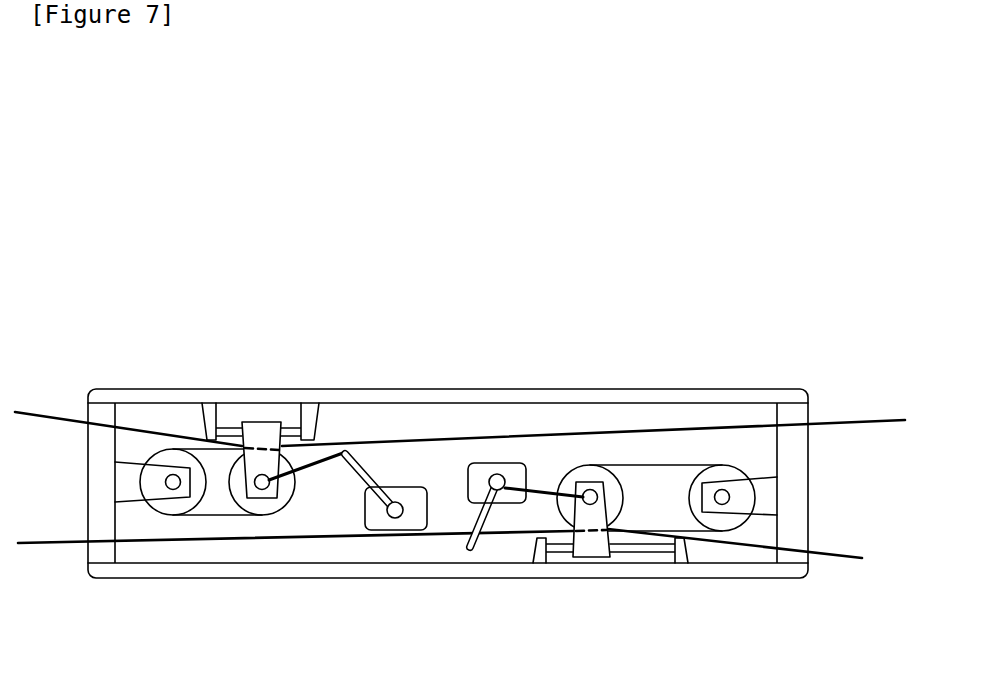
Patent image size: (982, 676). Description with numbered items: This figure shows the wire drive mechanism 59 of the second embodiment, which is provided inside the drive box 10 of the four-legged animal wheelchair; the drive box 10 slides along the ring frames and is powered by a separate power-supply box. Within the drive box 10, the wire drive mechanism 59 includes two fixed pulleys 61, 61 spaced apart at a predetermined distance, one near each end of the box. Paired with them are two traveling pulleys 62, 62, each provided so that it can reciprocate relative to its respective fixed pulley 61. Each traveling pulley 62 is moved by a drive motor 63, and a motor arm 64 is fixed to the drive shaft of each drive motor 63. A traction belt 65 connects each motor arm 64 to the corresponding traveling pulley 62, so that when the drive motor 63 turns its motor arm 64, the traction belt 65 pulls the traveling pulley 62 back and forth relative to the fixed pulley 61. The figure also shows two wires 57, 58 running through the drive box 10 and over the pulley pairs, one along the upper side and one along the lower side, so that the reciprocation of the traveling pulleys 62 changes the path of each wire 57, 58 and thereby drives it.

The drive box 10 is at (437, 389).
The first wire 57 is at (50, 417).
The second wire 58 is at (47, 545).
The wire drive mechanism 59 is at (145, 258).
The fixed pulley 61 is at (730, 465).
The traveling pulley 62 is at (595, 465).
The drive motor 63 is at (498, 463).
The motor arm 64 is at (362, 468).
The traction belt 65 is at (333, 458).